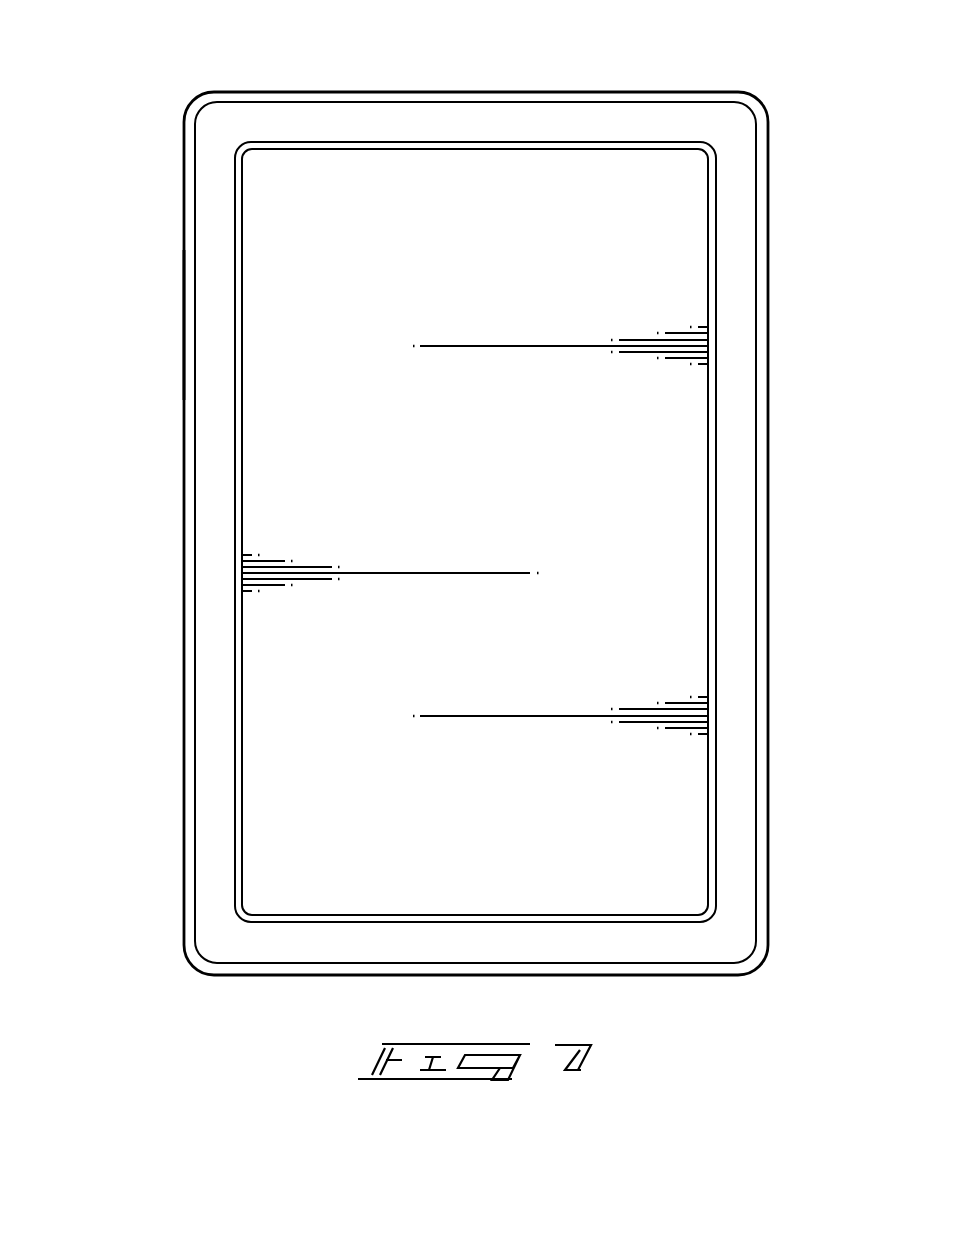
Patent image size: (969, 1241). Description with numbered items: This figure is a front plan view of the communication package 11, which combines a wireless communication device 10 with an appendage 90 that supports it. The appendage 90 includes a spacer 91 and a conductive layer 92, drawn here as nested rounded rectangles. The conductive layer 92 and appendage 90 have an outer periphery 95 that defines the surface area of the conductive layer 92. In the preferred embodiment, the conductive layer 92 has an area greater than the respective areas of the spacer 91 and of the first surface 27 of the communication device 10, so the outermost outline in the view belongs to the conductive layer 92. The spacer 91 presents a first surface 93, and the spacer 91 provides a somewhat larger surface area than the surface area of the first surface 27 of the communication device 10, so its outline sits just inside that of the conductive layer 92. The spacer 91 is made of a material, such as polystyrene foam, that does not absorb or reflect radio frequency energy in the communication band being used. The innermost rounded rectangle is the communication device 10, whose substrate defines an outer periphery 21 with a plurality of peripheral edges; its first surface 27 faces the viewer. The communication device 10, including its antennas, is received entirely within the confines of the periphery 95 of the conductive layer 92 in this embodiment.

The communication package 11 is at (466, 491).
The outer periphery 21 is at (475, 142).
The first surface 27 is at (490, 485).
The first surface 93 is at (215, 252).
The conductive layer 92 is at (190, 381).
The spacer 91 is at (737, 250).
The appendage 90 is at (768, 317).
The outer periphery 95 is at (768, 398).
The wireless communication device 10 is at (713, 490).